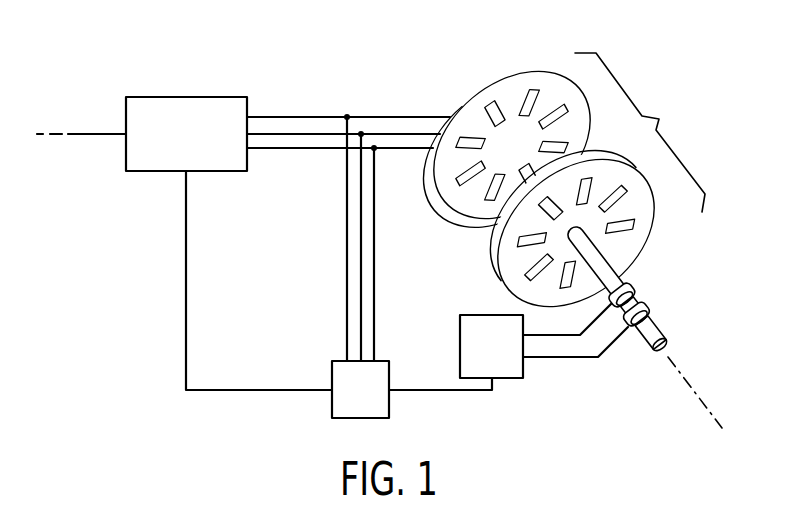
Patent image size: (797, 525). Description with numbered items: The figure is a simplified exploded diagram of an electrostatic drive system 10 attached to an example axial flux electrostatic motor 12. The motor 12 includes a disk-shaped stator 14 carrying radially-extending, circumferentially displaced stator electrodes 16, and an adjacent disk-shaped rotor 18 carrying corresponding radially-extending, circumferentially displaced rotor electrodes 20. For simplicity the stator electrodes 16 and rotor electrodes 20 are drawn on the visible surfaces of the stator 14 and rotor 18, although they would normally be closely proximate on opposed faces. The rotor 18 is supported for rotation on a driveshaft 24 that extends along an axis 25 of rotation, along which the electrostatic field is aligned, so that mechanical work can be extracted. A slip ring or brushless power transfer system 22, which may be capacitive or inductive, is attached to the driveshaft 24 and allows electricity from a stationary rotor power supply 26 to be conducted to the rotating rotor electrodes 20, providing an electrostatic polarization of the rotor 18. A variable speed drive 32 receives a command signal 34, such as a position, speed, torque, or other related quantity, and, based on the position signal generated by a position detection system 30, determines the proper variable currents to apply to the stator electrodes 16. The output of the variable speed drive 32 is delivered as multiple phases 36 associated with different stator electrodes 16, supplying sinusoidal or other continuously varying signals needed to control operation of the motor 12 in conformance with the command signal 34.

The electrostatic drive system 10 is at (163, 60).
The electrostatic motor 12 is at (640, 132).
The disk-shaped stator 14 is at (507, 141).
The stator electrodes 16 is at (465, 100).
The disk-shaped rotor 18 is at (566, 228).
The rotor electrodes 20 is at (500, 282).
The slip ring or brushless power transfer system 22 is at (661, 280).
The driveshaft 24 is at (659, 325).
The axis of rotation 25 is at (700, 394).
The rotor power supply 26 is at (506, 355).
The position detection system 30 is at (373, 400).
The variable speed drive 32 is at (197, 149).
The command signal 34 is at (97, 133).
The phases 36 is at (317, 148).